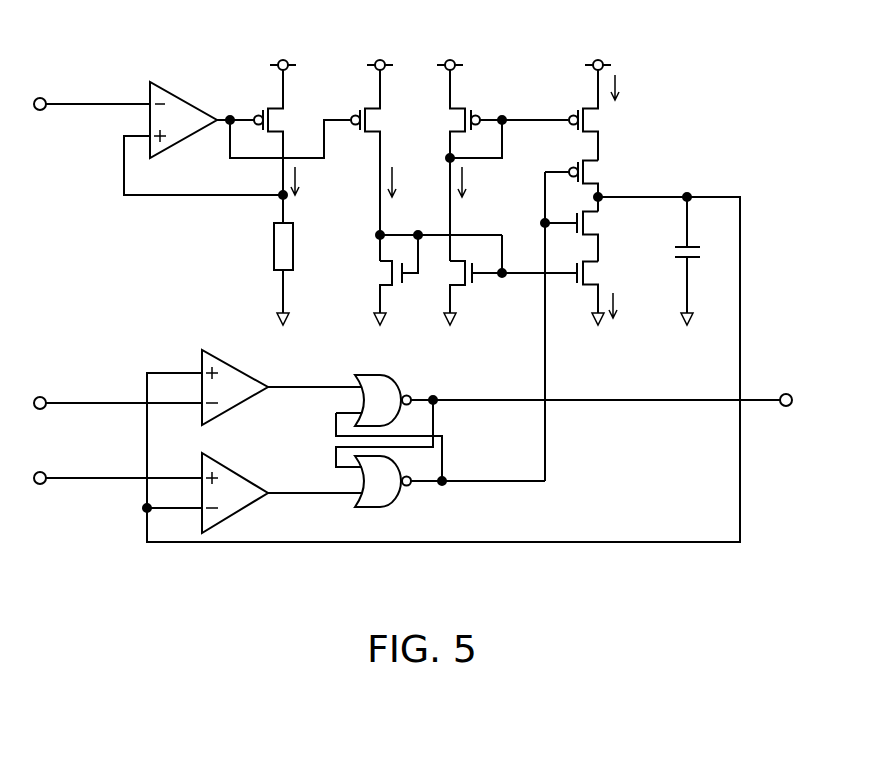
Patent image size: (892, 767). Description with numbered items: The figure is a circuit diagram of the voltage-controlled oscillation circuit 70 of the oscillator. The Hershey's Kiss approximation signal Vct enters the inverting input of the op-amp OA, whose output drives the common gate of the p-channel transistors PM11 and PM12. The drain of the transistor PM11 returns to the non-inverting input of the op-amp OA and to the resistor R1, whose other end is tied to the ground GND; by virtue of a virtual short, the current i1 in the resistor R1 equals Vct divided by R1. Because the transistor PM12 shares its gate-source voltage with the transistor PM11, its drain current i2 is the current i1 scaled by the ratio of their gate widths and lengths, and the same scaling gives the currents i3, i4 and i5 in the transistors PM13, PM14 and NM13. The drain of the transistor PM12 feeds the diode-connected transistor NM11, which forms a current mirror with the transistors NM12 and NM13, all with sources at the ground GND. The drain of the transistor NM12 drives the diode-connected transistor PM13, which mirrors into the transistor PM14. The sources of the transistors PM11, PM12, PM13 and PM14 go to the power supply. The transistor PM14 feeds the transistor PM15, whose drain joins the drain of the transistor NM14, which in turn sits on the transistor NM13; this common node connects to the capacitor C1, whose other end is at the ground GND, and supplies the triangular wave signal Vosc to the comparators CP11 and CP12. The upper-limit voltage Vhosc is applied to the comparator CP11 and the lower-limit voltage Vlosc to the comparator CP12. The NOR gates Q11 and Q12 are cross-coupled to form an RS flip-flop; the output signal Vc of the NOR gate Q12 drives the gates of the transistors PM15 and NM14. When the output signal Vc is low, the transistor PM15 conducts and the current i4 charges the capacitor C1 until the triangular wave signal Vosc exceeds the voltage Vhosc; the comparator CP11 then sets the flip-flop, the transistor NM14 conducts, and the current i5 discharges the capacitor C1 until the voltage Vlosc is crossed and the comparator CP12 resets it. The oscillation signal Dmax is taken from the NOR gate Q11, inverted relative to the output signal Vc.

The voltage-controlled oscillation circuit 70 is at (676, 66).
The op-amp OA is at (237, 133).
The transistor PM11 is at (264, 141).
The transistor PM12 is at (360, 160).
The transistor PM13 is at (503, 160).
The transistor PM14 is at (611, 110).
The transistor PM15 is at (599, 186).
The transistor NM11 is at (414, 278).
The transistor NM12 is at (510, 280).
The transistor NM13 is at (616, 294).
The transistor NM14 is at (598, 237).
The resistor R1 is at (269, 268).
The capacitor C1 is at (705, 261).
The comparator CP11 is at (282, 384).
The comparator CP12 is at (252, 492).
The NOR gate Q11 is at (558, 415).
The NOR gate Q12 is at (440, 475).
The signal Vct is at (92, 95).
The voltage Vhosc is at (118, 393).
The voltage Vlosc is at (118, 468).
The triangular wave signal Vosc is at (452, 358).
The output signal Vc is at (512, 326).
The oscillation signal Dmax is at (775, 389).
The ground GND is at (261, 310).
The current i1 is at (304, 181).
The drain current i2 is at (402, 182).
The current i3 is at (472, 182).
The current i4 is at (624, 88).
The current i5 is at (622, 305).